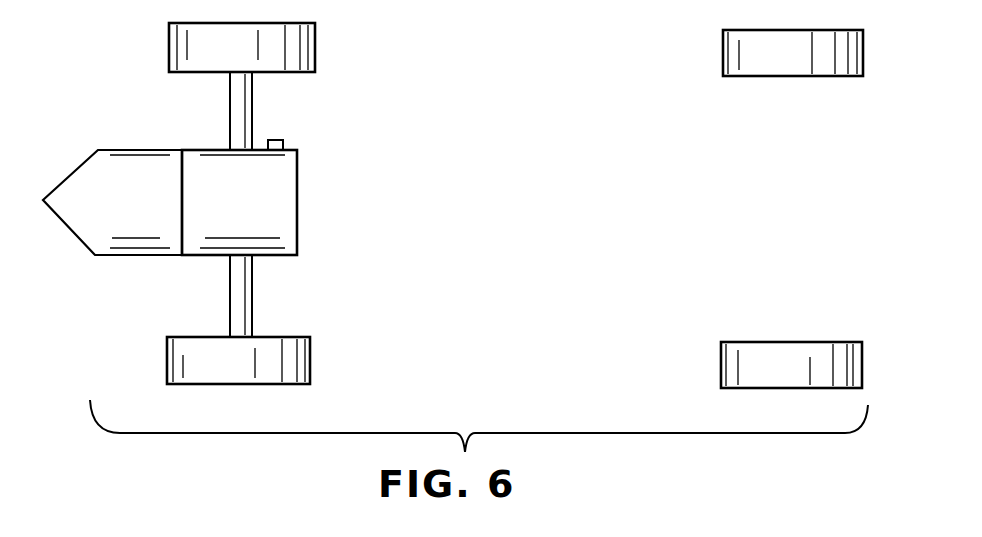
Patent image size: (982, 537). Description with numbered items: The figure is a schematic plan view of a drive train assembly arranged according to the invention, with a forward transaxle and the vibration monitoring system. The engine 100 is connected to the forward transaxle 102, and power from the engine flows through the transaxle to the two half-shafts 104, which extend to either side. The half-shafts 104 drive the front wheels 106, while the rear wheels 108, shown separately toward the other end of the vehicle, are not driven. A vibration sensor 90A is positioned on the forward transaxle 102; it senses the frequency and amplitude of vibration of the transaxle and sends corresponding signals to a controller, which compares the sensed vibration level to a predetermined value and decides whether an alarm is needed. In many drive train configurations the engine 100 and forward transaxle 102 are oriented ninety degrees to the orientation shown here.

The engine 100 is at (112, 152).
The forward transaxle 102 is at (297, 204).
The vibration sensor 90A is at (284, 142).
The half-shafts 104 is at (230, 124).
The front wheels 106 is at (315, 53).
The rear wheels 108 is at (752, 77).